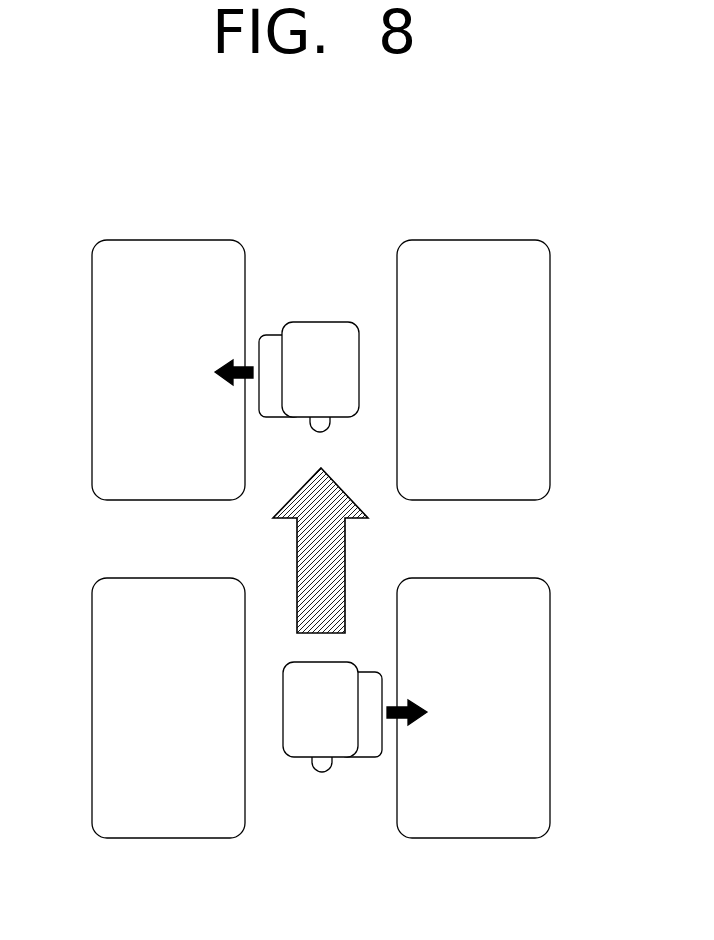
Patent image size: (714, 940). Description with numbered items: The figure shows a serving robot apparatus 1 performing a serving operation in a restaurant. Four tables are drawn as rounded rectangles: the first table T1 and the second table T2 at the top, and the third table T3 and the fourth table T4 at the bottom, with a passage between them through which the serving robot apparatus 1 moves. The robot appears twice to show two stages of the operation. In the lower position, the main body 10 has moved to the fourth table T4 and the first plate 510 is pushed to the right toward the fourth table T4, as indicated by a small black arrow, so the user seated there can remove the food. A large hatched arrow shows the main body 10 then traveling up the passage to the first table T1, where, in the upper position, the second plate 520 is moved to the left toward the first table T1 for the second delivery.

The serving robot apparatus 1 is at (321, 549).
The main body 10 is at (333, 347).
The first plate 510 is at (368, 747).
The second plate 520 is at (267, 347).
The first table T1 is at (103, 366).
The second table T2 is at (538, 367).
The third table T3 is at (103, 707).
The fourth table T4 is at (538, 708).